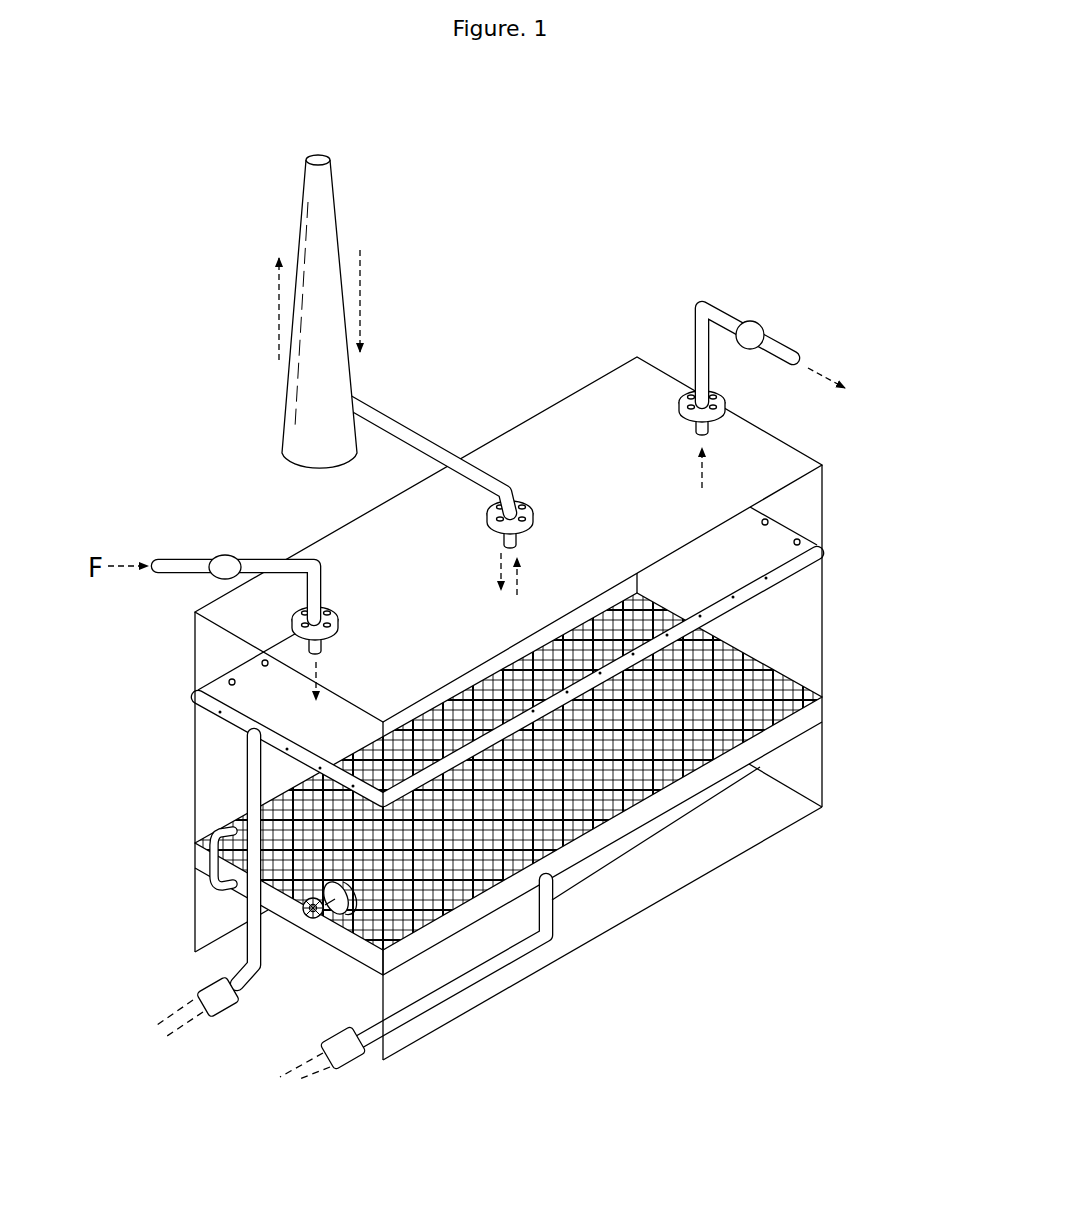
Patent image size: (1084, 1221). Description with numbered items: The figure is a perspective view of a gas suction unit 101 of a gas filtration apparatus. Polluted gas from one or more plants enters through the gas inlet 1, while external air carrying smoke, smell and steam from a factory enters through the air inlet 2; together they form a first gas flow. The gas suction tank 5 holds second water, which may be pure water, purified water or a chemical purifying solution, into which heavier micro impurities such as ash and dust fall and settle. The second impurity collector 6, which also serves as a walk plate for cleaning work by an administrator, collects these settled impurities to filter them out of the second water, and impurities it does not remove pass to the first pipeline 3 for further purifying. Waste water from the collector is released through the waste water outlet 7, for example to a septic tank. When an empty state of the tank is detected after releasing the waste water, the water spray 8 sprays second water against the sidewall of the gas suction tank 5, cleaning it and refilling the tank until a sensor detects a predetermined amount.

The gas inlet 1 is at (195, 562).
The air inlet 2 is at (310, 428).
The first pipeline 3 is at (776, 347).
The gas suction tank 5 is at (808, 612).
The second impurity collector 6 is at (702, 742).
The waste water outlet 7 is at (558, 933).
The water spray 8 is at (240, 725).
The gas suction unit 101 is at (508, 343).